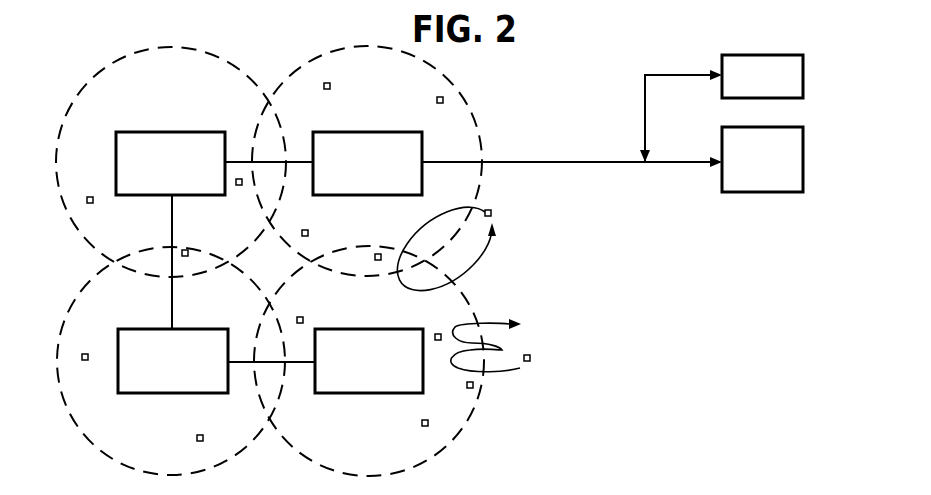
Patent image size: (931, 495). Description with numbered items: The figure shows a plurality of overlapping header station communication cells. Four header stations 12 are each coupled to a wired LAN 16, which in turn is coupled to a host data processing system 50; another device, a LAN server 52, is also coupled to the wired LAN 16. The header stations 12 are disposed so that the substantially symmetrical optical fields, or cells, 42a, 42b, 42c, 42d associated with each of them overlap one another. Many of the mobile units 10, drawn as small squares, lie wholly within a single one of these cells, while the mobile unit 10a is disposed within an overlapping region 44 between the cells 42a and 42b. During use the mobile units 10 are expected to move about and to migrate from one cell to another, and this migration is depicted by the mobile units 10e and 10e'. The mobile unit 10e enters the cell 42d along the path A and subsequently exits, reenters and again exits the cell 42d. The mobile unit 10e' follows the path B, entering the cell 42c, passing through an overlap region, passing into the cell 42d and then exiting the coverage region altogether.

The mobile units 10 is at (92, 204).
The mobile unit 10a is at (190, 257).
The mobile unit 10e is at (555, 348).
The mobile unit 10e' is at (513, 210).
The header stations 12 is at (163, 132).
The wired LAN 16 is at (573, 163).
The optical field 42a is at (58, 177).
The optical field 42b is at (58, 354).
The optical field 42c is at (472, 120).
The optical field 42d is at (468, 421).
The overlapping region 44 is at (130, 258).
The host data processing system 50 is at (722, 137).
The LAN server 52 is at (722, 87).
The path A is at (503, 372).
The path B is at (451, 225).